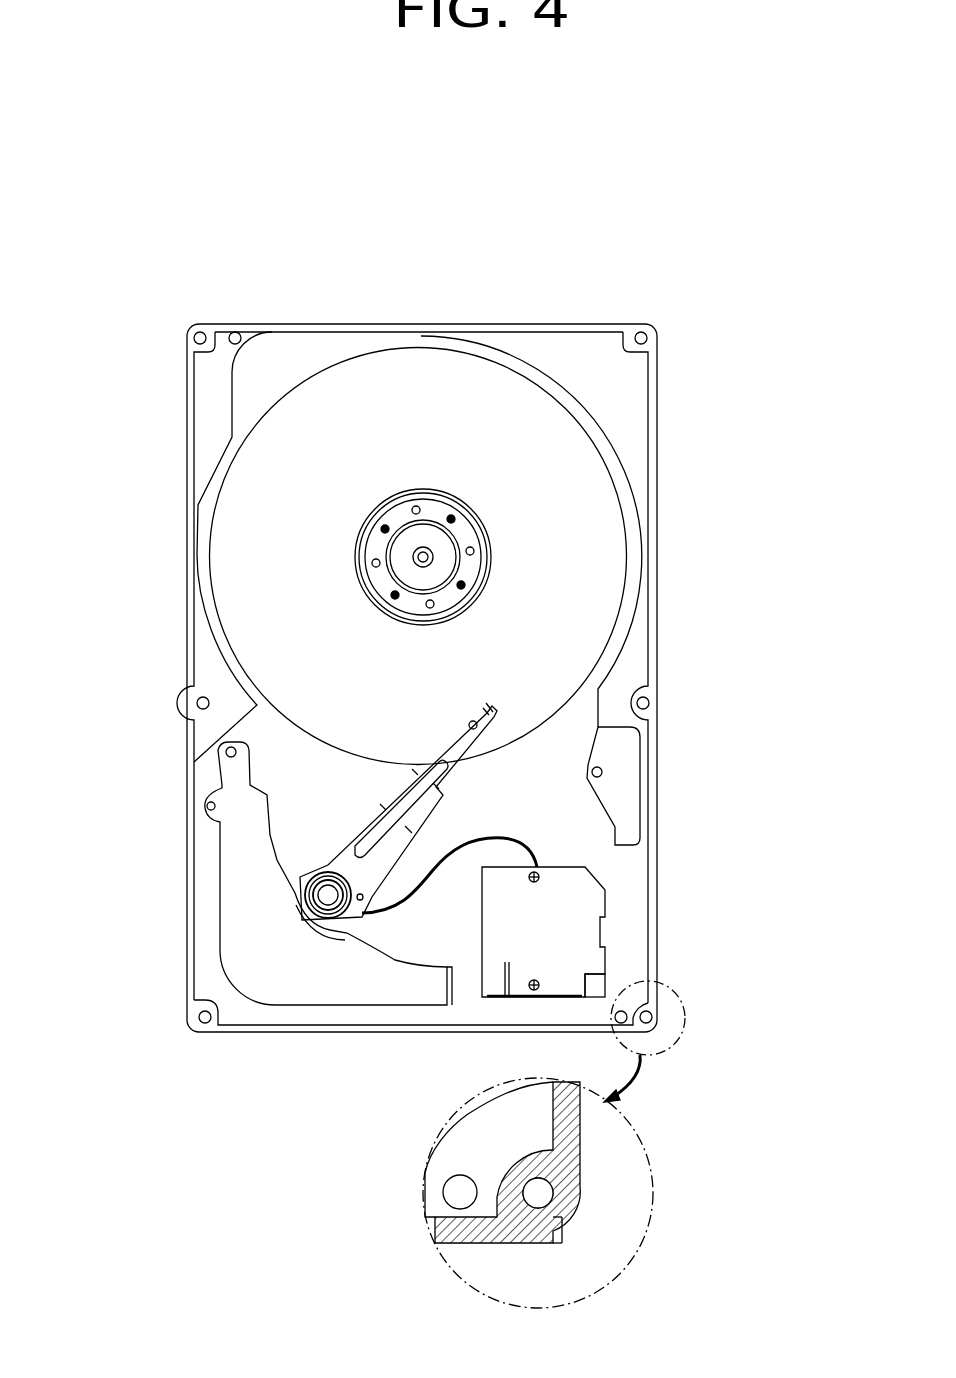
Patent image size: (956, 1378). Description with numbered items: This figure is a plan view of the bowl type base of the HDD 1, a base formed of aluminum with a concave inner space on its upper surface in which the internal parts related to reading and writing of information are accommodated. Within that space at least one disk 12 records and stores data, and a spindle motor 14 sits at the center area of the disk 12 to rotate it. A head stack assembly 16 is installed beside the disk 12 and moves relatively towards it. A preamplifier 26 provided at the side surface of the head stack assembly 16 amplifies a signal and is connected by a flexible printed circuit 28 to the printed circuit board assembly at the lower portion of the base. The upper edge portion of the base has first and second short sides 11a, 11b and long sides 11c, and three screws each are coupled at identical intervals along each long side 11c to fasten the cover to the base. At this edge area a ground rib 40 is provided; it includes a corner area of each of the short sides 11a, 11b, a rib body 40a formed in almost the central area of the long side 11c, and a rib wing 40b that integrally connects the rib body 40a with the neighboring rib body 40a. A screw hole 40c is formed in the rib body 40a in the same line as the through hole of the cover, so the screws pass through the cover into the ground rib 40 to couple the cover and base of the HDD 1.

The HDD 1 is at (392, 316).
The first short side 11a is at (320, 1033).
The second short side 11b is at (315, 332).
The long side 11c is at (208, 645).
The disk 12 is at (432, 430).
The spindle motor 14 is at (356, 577).
The head stack assembly 16 is at (357, 826).
The preamplifier 26 is at (358, 915).
The flexible printed circuit 28 is at (513, 835).
The ground rib 40 is at (762, 672).
The rib body 40a is at (573, 1177).
The rib wing 40b is at (580, 1108).
The screw hole 40c is at (194, 338).